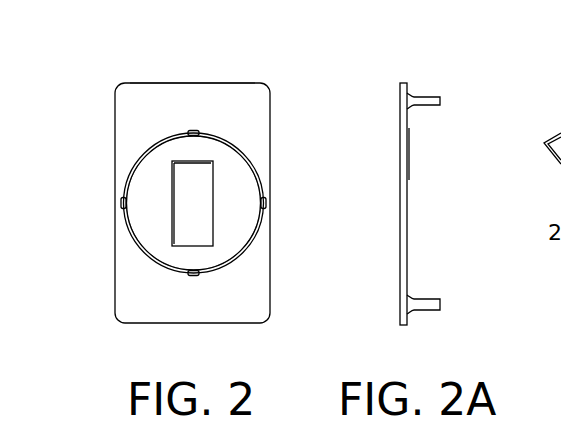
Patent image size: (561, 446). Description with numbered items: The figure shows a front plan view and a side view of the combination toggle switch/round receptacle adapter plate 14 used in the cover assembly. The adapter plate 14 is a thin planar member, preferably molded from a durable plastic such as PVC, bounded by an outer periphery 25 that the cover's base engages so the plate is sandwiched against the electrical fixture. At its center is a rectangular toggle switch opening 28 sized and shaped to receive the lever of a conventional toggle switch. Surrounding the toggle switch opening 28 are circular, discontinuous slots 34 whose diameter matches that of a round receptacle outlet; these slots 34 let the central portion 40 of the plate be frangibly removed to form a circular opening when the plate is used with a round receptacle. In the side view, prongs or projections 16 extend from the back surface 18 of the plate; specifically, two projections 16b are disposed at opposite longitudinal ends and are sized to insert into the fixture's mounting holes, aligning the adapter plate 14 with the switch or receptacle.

In FIG. 2, the toggle switch/round receptacle adapter plate 14 is at (115, 130).
In FIG. 2A, the toggle switch/round receptacle adapter plate 14 is at (400, 203).
In FIG. 2, the outer periphery 25 is at (195, 108).
In FIG. 2, the circular discontinuous slots 34 is at (263, 218).
In FIG. 2, the central portion 40 is at (147, 192).
In FIG. 2, the toggle switch opening 28 is at (181, 233).
In FIG. 2A, the prong or projection 16 is at (479, 182).
In FIG. 2A, the projections 16b is at (424, 99).
In FIG. 2A, the back surface 18 is at (409, 127).